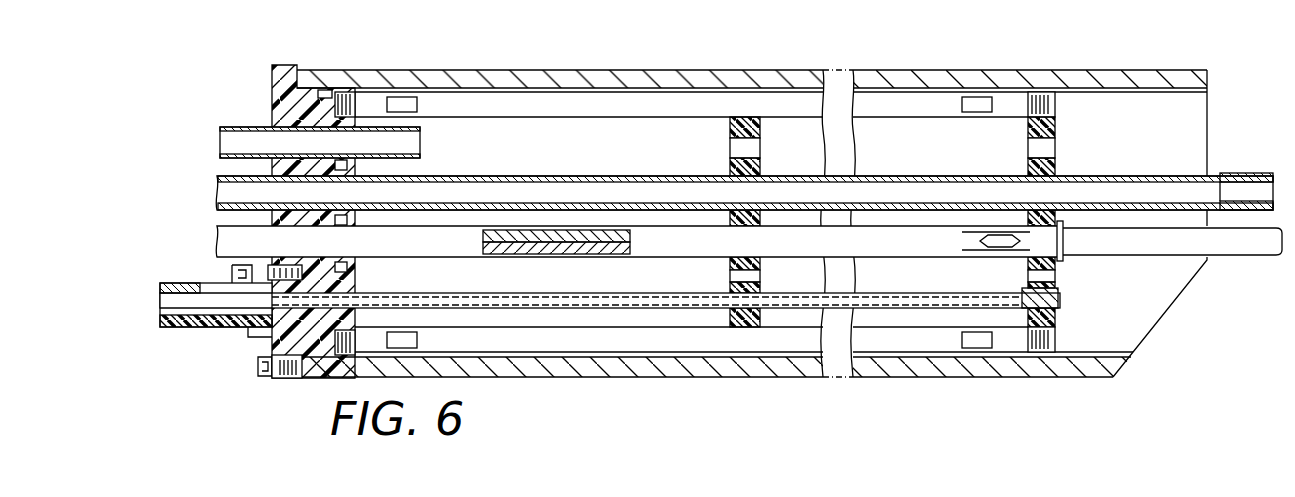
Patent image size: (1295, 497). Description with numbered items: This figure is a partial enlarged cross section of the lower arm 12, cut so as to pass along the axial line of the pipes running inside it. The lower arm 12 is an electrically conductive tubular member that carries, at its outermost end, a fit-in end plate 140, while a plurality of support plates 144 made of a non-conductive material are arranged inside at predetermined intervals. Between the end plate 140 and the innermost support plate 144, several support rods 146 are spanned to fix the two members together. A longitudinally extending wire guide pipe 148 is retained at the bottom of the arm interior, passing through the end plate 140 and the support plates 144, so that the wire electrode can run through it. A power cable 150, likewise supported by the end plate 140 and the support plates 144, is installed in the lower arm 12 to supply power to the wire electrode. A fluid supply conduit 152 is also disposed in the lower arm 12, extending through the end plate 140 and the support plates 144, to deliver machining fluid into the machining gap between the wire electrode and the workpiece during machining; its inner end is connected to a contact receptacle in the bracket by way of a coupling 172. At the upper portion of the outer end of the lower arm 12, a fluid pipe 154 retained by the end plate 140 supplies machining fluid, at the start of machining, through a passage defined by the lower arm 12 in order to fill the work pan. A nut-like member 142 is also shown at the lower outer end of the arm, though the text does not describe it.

The lower arm 12 is at (614, 70).
The fit-in end plate 140 is at (272, 97).
The nut 142 is at (258, 361).
The support plates 144 is at (737, 128).
The support rods 146 is at (792, 100).
The wire guide pipe 148 is at (530, 296).
The power cable 150 is at (885, 250).
The fluid supply conduit 152 is at (516, 176).
The fluid pipe 154 is at (228, 143).
The coupling 172 is at (1246, 176).